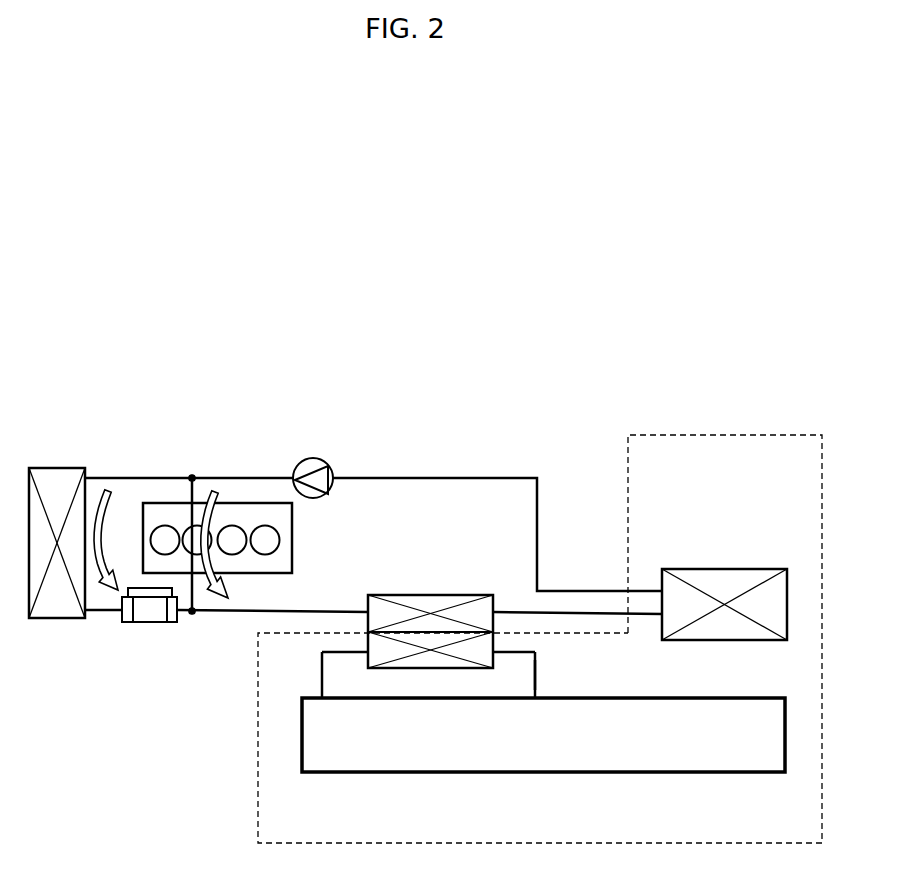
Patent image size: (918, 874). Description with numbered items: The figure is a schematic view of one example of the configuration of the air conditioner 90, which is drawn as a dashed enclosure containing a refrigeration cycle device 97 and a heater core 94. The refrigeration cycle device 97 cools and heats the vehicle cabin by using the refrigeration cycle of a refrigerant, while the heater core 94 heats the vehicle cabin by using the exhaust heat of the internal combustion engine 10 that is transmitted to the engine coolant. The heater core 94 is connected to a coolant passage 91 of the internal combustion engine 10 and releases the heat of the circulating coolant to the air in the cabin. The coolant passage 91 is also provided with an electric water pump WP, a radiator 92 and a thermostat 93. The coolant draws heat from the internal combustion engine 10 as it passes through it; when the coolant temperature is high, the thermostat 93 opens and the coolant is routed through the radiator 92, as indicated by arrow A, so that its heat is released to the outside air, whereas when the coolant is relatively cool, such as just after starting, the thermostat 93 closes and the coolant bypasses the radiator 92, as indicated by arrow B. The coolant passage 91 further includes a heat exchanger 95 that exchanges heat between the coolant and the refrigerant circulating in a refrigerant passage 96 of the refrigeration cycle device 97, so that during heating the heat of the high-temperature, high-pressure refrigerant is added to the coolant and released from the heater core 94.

The internal combustion engine 10 is at (293, 540).
The air conditioner 90 is at (739, 435).
The coolant passage 91 is at (513, 612).
The radiator 92 is at (60, 468).
The thermostat 93 is at (148, 623).
The heater core 94 is at (726, 569).
The heat exchanger 95 is at (430, 595).
The refrigerant passage 96 is at (537, 678).
The refrigeration cycle device 97 is at (550, 773).
The electric water pump WP is at (313, 458).
The arrow A is at (105, 490).
The arrow B is at (212, 490).